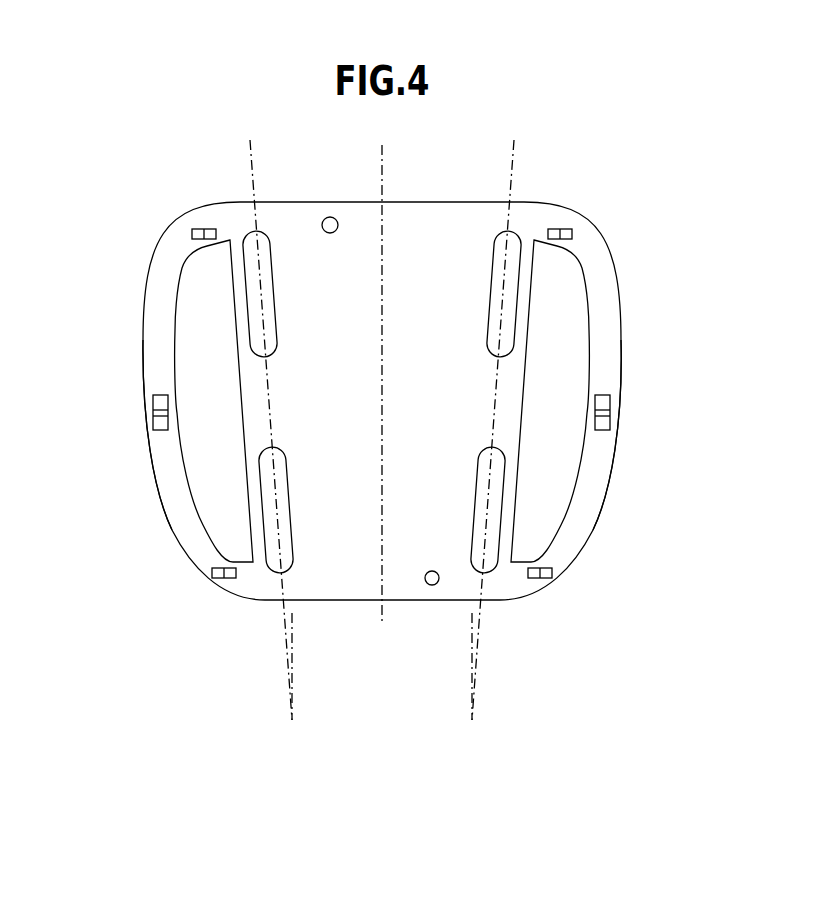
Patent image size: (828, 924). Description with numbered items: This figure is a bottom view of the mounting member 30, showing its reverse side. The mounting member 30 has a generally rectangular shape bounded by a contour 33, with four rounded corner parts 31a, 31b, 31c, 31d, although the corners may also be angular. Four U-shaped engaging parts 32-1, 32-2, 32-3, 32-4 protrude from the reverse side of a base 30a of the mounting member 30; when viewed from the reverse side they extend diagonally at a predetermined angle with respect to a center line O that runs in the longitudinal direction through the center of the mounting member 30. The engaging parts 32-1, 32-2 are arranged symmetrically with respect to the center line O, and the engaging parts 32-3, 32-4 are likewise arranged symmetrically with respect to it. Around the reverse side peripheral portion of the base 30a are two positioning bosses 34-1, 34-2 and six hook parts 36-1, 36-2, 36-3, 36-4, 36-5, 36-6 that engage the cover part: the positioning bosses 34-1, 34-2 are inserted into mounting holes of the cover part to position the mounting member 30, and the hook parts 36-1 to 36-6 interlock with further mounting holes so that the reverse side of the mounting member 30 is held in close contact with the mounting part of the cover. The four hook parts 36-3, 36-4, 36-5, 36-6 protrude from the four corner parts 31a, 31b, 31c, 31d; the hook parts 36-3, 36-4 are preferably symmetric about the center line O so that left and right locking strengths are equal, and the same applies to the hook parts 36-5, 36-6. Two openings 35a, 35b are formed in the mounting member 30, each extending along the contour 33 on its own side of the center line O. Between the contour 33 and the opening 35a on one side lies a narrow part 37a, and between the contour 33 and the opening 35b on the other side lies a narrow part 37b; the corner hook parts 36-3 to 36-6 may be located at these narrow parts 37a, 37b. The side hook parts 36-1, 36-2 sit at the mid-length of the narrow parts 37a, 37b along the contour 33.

The mounting member 30 is at (382, 374).
The base 30a is at (458, 223).
The corner part 31a is at (578, 237).
The corner part 31b is at (183, 237).
The corner part 31c is at (202, 555).
The corner part 31d is at (562, 555).
The U-shaped engaging part 32-1 is at (489, 308).
The U-shaped engaging part 32-2 is at (275, 308).
The U-shaped engaging part 32-3 is at (475, 490).
The U-shaped engaging part 32-4 is at (289, 482).
The contour 33 is at (142, 358).
The positioning boss 34-1 is at (330, 217).
The positioning boss 34-2 is at (432, 586).
The opening 35a is at (545, 495).
The opening 35b is at (220, 495).
The hook part 36-1 is at (610, 400).
The hook part 36-2 is at (153, 400).
The hook part 36-3 is at (560, 229).
The hook part 36-4 is at (203, 229).
The hook part 36-5 is at (213, 571).
The hook part 36-6 is at (553, 571).
The narrow part 37a is at (597, 463).
The narrow part 37b is at (167, 463).
The center line O is at (383, 182).